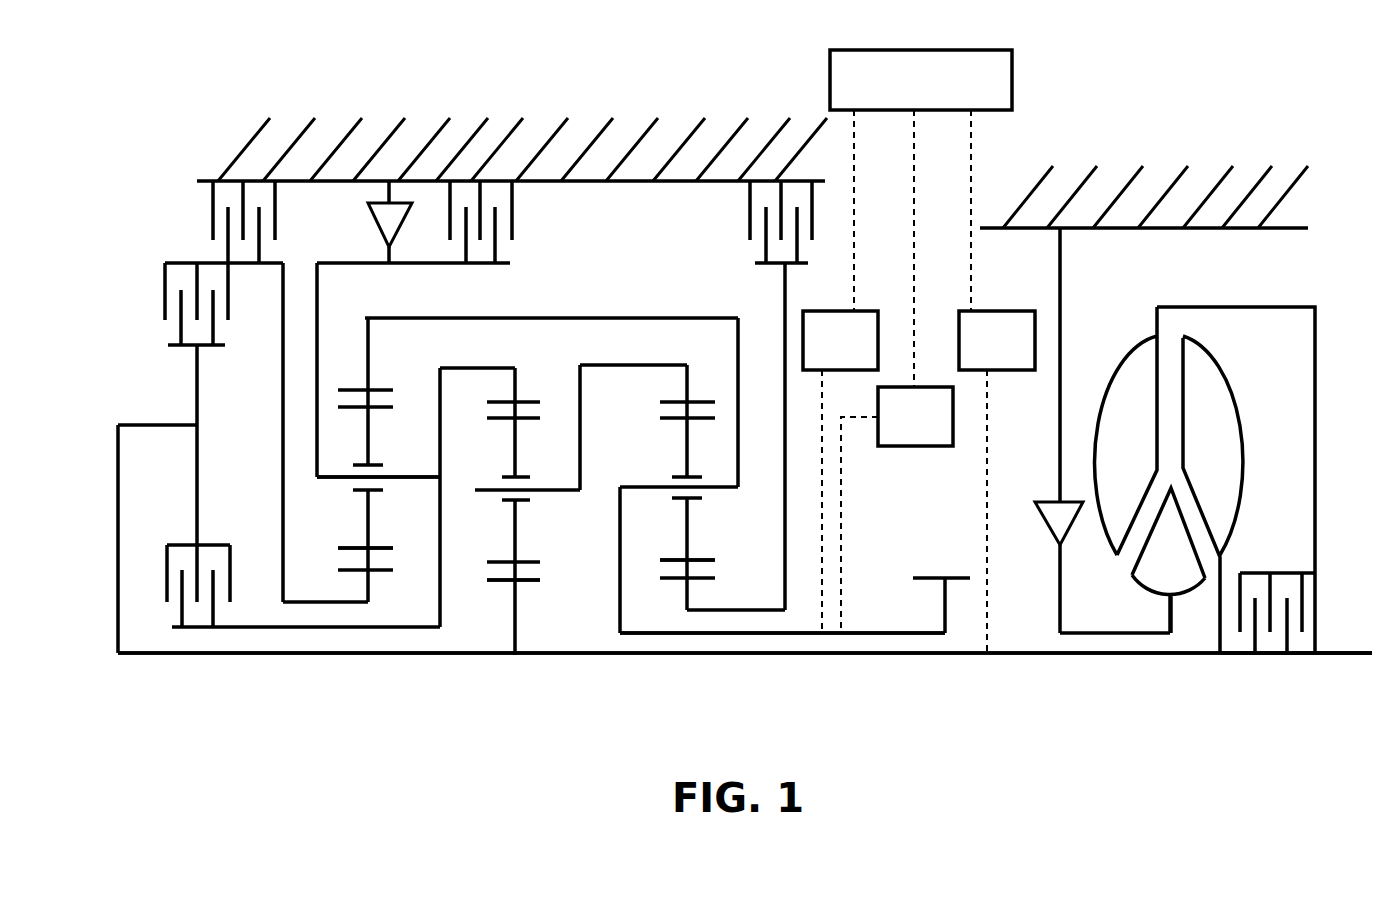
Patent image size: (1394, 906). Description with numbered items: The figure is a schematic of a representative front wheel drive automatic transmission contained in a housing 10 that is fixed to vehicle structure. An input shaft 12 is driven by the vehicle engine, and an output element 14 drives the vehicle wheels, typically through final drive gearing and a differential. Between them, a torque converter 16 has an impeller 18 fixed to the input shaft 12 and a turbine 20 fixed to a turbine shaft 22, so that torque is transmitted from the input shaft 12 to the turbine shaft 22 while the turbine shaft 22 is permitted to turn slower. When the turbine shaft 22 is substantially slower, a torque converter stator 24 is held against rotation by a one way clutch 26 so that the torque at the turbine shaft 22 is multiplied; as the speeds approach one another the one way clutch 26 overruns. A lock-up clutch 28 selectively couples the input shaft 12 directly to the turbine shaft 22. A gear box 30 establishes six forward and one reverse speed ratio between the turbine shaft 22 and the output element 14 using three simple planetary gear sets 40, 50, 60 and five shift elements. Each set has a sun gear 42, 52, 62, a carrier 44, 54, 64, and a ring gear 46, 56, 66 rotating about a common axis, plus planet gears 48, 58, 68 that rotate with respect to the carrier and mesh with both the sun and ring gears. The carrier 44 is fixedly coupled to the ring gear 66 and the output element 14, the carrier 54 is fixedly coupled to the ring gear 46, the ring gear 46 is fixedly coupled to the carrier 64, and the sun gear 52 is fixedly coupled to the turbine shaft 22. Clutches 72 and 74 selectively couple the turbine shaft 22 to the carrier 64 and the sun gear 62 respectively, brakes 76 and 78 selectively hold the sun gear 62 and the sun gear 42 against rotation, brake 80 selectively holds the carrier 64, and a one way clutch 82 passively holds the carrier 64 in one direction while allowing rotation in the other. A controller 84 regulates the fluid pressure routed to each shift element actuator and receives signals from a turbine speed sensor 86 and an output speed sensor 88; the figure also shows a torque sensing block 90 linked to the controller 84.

The housing 10 is at (643, 138).
The input shaft 12 is at (1347, 655).
The output element 14 is at (943, 610).
The torque converter 16 is at (1196, 452).
The impeller 18 is at (1115, 456).
The turbine 20 is at (1200, 456).
The turbine shaft 22 is at (973, 655).
The torque converter stator 24 is at (1158, 576).
The one way clutch 26 is at (1040, 518).
The lock-up clutch 28 is at (1255, 573).
The gear box 30 is at (540, 68).
The simple planetary gear set 40 is at (700, 545).
The sun gear 42 is at (687, 598).
The carrier 44 is at (717, 488).
The ring gear 46 is at (687, 383).
The planet gears 48 is at (687, 520).
The simple planetary gear set 50 is at (532, 529).
The sun gear 52 is at (517, 627).
The carrier 54 is at (542, 490).
The ring gear 56 is at (517, 388).
The planet gears 58 is at (512, 523).
The simple planetary gear set 60 is at (394, 517).
The sun gear 62 is at (370, 590).
The carrier 64 is at (442, 500).
The ring gear 66 is at (373, 345).
The planet gears 68 is at (348, 507).
The clutch 72 is at (230, 577).
The clutch 74 is at (233, 280).
The brake 76 is at (212, 212).
The brake 78 is at (748, 208).
The brake 80 is at (513, 213).
The one way clutch 82 is at (377, 228).
The controller 84 is at (1012, 75).
The turbine speed sensor 86 is at (1002, 370).
The output speed sensor 88 is at (922, 446).
The torque sensor 90 is at (865, 311).